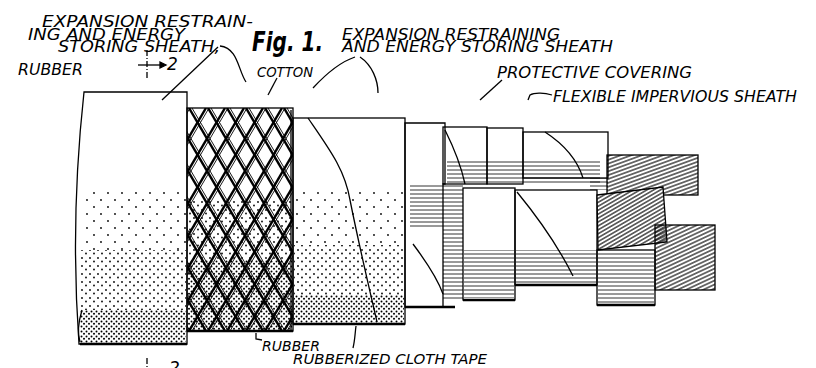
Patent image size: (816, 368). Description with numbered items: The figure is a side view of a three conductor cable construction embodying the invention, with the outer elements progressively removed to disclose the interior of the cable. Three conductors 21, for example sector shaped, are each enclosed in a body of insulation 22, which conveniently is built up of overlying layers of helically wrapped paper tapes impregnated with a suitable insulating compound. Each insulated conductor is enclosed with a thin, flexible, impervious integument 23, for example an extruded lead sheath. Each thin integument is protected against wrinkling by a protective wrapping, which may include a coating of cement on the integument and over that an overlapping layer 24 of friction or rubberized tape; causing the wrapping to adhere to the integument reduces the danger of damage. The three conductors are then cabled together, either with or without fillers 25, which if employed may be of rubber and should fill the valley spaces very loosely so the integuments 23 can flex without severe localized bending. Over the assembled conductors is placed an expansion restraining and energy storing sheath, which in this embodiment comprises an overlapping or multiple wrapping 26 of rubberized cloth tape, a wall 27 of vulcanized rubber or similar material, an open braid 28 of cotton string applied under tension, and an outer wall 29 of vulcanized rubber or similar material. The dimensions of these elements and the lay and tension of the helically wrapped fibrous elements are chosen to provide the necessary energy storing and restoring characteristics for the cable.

The conductor 21 is at (698, 180).
The insulation 22 is at (585, 137).
The flexible impervious integument 23 is at (507, 133).
The overlapping layer of friction or rubberized tape 24 is at (463, 132).
The filler 25 is at (423, 140).
The wrapping of rubberized cloth tape 26 is at (370, 127).
The wall of vulcanized rubber 27 is at (286, 110).
The open braid 28 is at (240, 107).
The outer wall of vulcanized rubber 29 is at (106, 97).